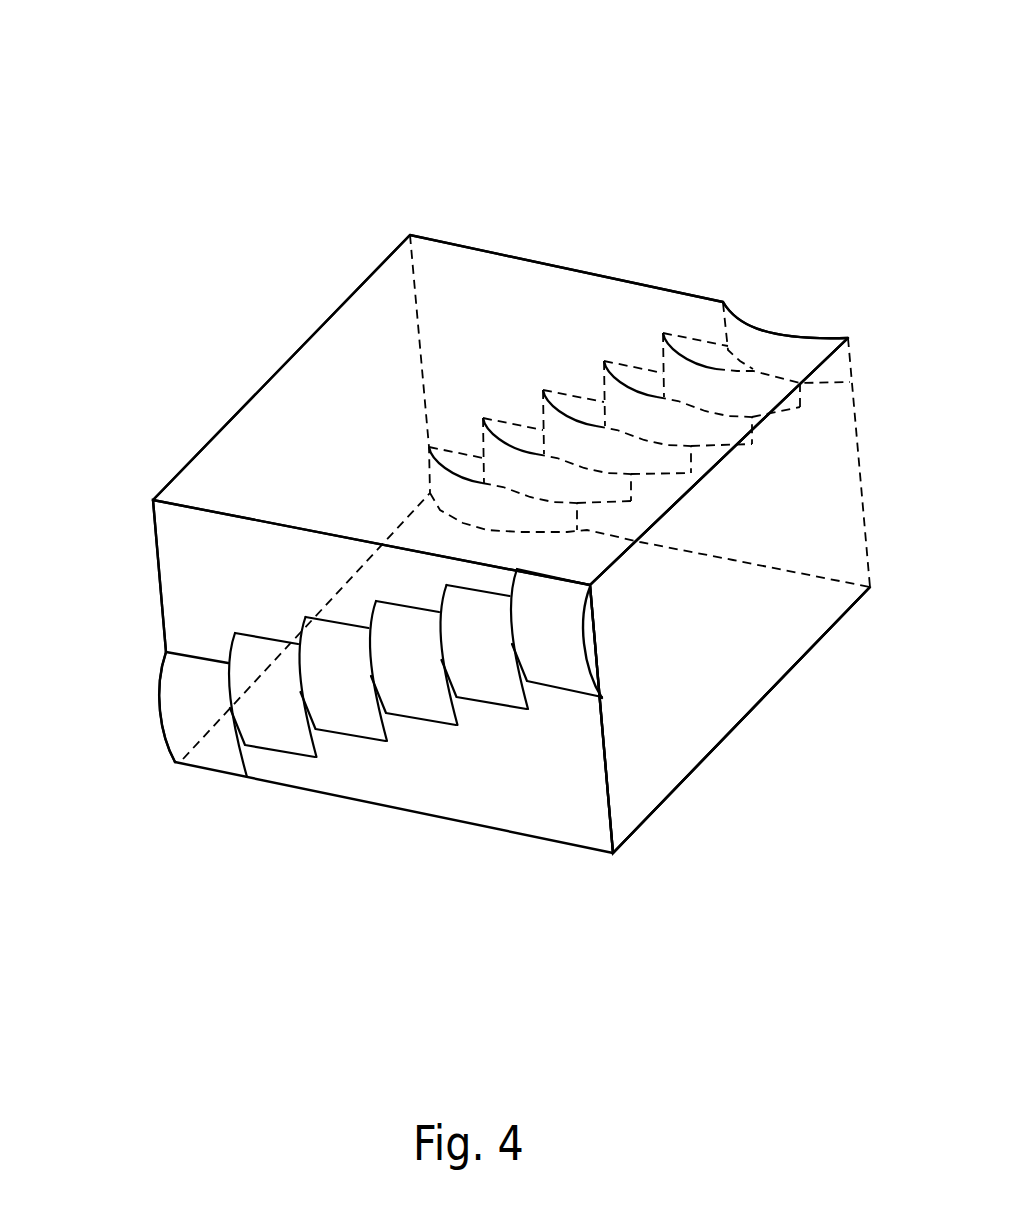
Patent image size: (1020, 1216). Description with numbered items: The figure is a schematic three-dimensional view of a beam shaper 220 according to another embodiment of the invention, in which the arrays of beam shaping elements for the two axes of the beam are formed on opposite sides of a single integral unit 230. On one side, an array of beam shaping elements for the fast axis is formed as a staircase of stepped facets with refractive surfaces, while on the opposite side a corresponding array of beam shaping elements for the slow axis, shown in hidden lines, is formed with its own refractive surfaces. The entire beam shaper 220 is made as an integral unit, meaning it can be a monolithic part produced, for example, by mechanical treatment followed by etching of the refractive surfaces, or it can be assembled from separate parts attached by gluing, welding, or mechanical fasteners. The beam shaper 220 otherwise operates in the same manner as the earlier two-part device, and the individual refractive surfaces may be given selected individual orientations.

The beam shaper 220 is at (245, 293).
The integral unit 230 is at (713, 637).